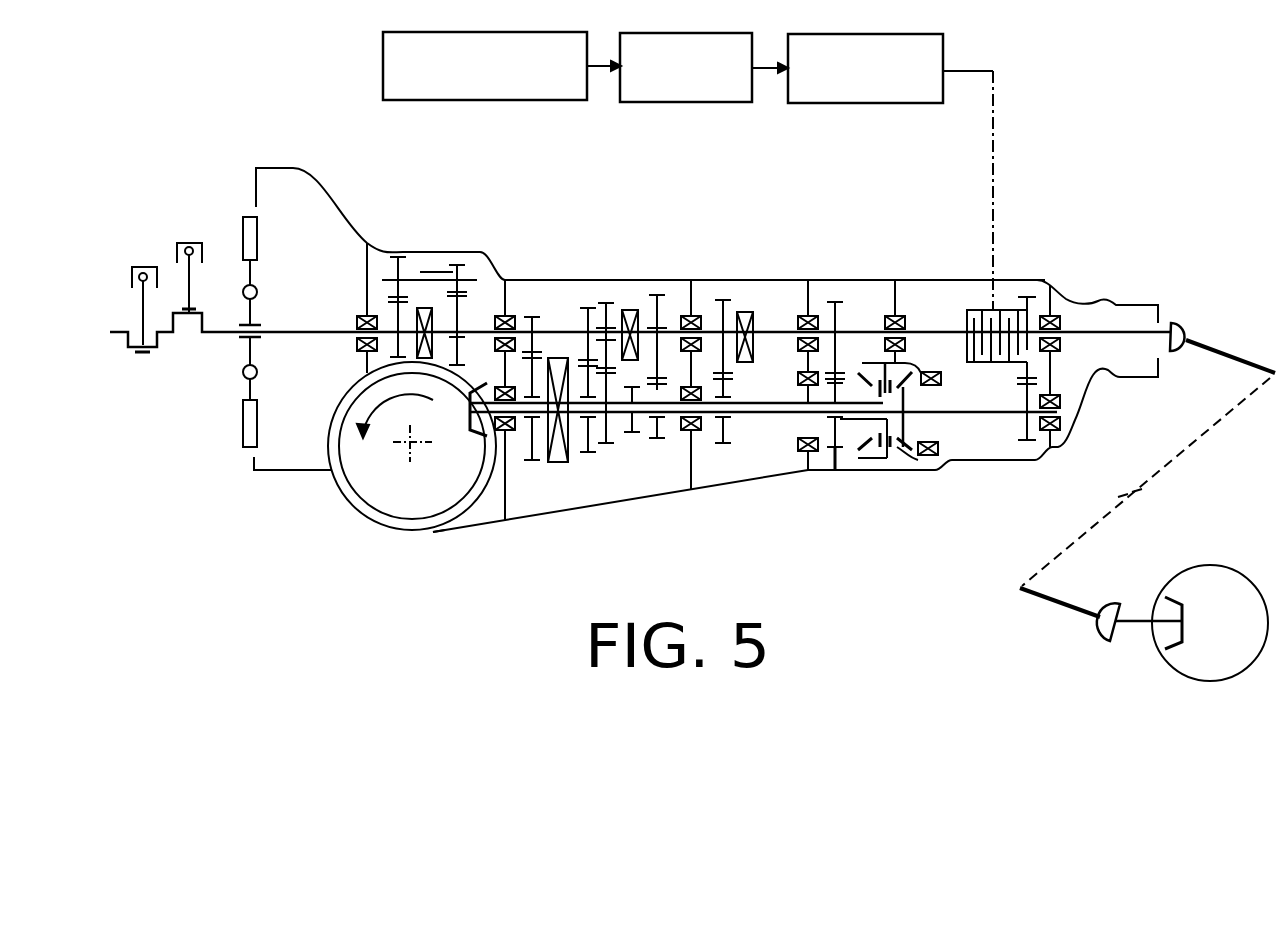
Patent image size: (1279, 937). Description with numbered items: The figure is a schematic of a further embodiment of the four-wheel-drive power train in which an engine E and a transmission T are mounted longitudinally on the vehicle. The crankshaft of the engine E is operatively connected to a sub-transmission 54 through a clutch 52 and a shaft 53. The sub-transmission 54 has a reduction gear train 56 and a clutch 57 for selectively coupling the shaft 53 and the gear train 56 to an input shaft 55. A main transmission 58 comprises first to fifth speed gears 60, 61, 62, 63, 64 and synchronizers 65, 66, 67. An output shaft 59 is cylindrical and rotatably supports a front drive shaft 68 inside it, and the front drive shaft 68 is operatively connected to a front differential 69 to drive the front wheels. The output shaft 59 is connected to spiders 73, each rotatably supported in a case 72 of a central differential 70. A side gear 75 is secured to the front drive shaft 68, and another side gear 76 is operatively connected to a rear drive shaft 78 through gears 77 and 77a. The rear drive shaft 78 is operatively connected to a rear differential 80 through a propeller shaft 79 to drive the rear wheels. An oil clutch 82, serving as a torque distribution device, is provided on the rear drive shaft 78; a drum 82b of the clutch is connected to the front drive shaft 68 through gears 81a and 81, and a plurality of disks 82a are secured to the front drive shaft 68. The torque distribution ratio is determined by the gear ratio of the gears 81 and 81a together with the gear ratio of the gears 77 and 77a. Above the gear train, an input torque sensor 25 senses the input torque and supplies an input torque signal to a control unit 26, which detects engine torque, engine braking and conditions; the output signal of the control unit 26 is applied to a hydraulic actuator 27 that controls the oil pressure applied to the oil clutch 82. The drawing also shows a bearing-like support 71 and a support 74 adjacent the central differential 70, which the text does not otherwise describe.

The input torque sensor 25 is at (567, 34).
The control unit 26 is at (743, 34).
The hydraulic actuator 27 is at (929, 34).
The engine E is at (161, 246).
The transmission T is at (779, 270).
The clutch 52 is at (273, 257).
The shaft 53 is at (334, 332).
The sub-transmission 54 is at (447, 271).
The input shaft 55 is at (494, 325).
The reduction gear train 56 is at (460, 266).
The clutch 57 is at (440, 358).
The main transmission 58 is at (633, 302).
The output shaft 59 is at (645, 413).
The first speed gear 60 is at (547, 305).
The second speed gear 61 is at (588, 308).
The third speed gear 62 is at (606, 302).
The fourth speed gear 63 is at (689, 282).
The fifth speed gear 64 is at (725, 300).
The synchronizer 65 is at (563, 462).
The synchronizer 66 is at (657, 295).
The synchronizer 67 is at (773, 348).
The front drive shaft 68 is at (742, 414).
The front differential 69 is at (441, 530).
The central differential 70 is at (948, 270).
The differential case 71 is at (869, 356).
The case 72 is at (893, 463).
The spiders 73 is at (878, 462).
The bearing 74 is at (921, 457).
The side gear 75 is at (916, 396).
The side gear 76 is at (847, 462).
The gear 77 is at (830, 468).
The gear 77a is at (836, 301).
The rear drive shaft 78 is at (966, 334).
The propeller shaft 79 is at (1267, 362).
The rear differential 80 is at (1177, 673).
The gear 81 is at (1017, 441).
The gear 81a is at (1040, 282).
The oil clutch 82 is at (1003, 363).
The disks 82a is at (1035, 357).
The drum 82b is at (1003, 308).